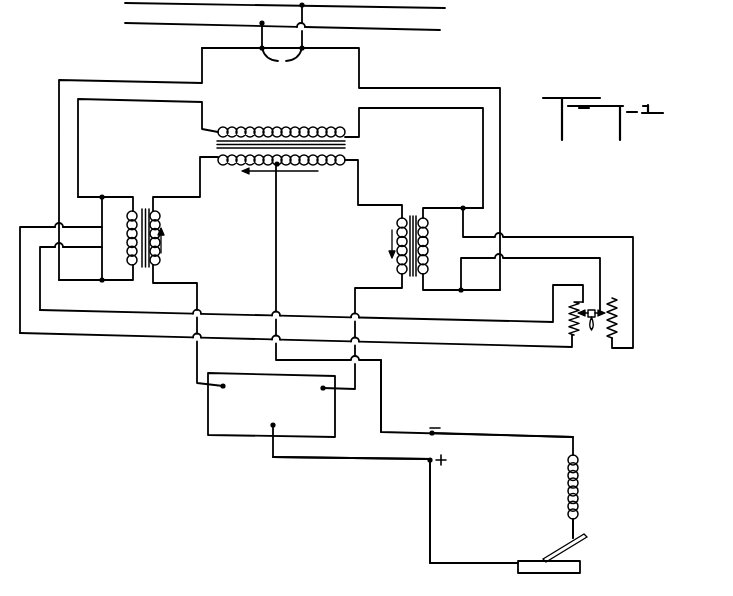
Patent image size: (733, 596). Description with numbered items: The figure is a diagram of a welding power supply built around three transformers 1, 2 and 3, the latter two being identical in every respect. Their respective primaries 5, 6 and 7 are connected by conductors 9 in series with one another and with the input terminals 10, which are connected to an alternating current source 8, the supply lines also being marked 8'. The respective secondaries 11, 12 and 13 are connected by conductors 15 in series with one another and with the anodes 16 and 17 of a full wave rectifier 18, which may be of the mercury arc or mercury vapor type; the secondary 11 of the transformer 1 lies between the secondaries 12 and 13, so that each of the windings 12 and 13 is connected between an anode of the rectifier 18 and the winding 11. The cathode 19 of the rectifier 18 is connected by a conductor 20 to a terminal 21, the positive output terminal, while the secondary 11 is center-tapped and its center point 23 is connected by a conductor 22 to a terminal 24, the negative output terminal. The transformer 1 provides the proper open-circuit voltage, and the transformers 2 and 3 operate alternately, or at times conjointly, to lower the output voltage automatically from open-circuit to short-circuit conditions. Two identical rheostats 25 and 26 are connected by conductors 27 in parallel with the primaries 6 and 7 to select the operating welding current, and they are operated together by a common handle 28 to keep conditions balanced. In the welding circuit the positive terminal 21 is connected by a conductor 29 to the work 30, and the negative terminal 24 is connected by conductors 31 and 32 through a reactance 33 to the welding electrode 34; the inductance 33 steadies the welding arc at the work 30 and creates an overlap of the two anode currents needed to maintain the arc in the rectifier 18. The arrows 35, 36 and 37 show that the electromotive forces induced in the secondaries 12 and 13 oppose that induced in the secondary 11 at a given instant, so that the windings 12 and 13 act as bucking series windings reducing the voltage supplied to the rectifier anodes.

The transformer 1 is at (308, 152).
The transformer 2 is at (154, 212).
The transformer 3 is at (402, 230).
The primary 5 is at (280, 127).
The primary 6 is at (127, 247).
The primary 7 is at (429, 251).
The alternating current source 8 is at (301, 17).
The supply mains 8' is at (266, 585).
The conductors 9 is at (132, 100).
The input terminals 10 is at (282, 42).
The secondary 11 is at (332, 168).
The secondary 12 is at (160, 262).
The secondary 13 is at (397, 265).
The conductors 15 is at (203, 188).
The anode 16 is at (222, 388).
The anode 17 is at (324, 390).
The full wave rectifier 18 is at (240, 424).
The cathode 19 is at (269, 432).
The conductor 20 is at (350, 460).
The positive output terminal 21 is at (428, 463).
The conductor 22 is at (385, 378).
The center point 23 is at (276, 166).
The negative output terminal 24 is at (430, 432).
The rheostat 25 is at (567, 335).
The rheostat 26 is at (622, 315).
The conductors 27 is at (563, 257).
The common handle 28 is at (592, 332).
The conductor 29 is at (431, 540).
The work 30 is at (545, 573).
The conductor 31 is at (550, 435).
The conductor 32 is at (575, 526).
The reactance 33 is at (579, 488).
The welding electrode 34 is at (568, 553).
The arrow 35 is at (306, 168).
The arrow 36 is at (165, 241).
The arrow 37 is at (390, 247).